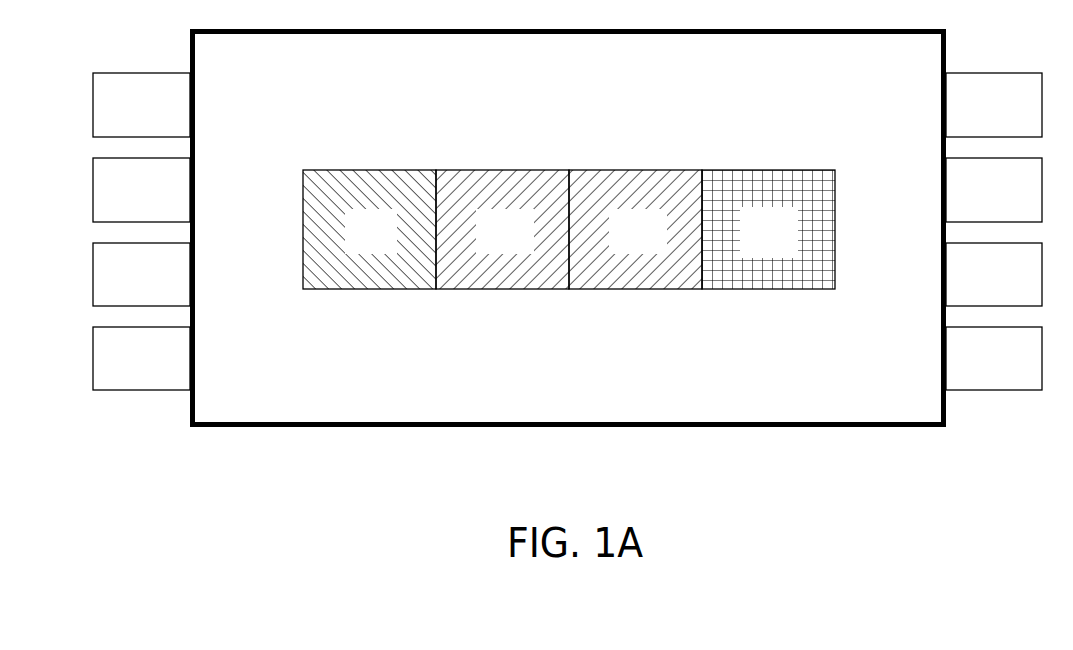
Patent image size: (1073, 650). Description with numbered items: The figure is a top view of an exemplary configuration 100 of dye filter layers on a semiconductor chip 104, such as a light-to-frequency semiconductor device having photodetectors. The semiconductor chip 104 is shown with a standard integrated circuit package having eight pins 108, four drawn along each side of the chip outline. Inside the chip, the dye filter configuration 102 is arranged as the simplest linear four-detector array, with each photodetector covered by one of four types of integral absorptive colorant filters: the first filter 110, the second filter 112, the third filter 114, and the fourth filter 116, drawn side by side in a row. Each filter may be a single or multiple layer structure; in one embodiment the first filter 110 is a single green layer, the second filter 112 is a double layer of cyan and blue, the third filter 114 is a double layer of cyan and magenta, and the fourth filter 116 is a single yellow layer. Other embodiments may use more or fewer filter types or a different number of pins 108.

The configuration 100 is at (567, 257).
The dye filter configuration 102 is at (569, 232).
The semiconductor chip 104 is at (823, 427).
The pin 108 is at (165, 118).
The filter F1 110 is at (333, 170).
The filter F2 112 is at (465, 170).
The filter F3 114 is at (597, 170).
The filter F4 116 is at (729, 170).